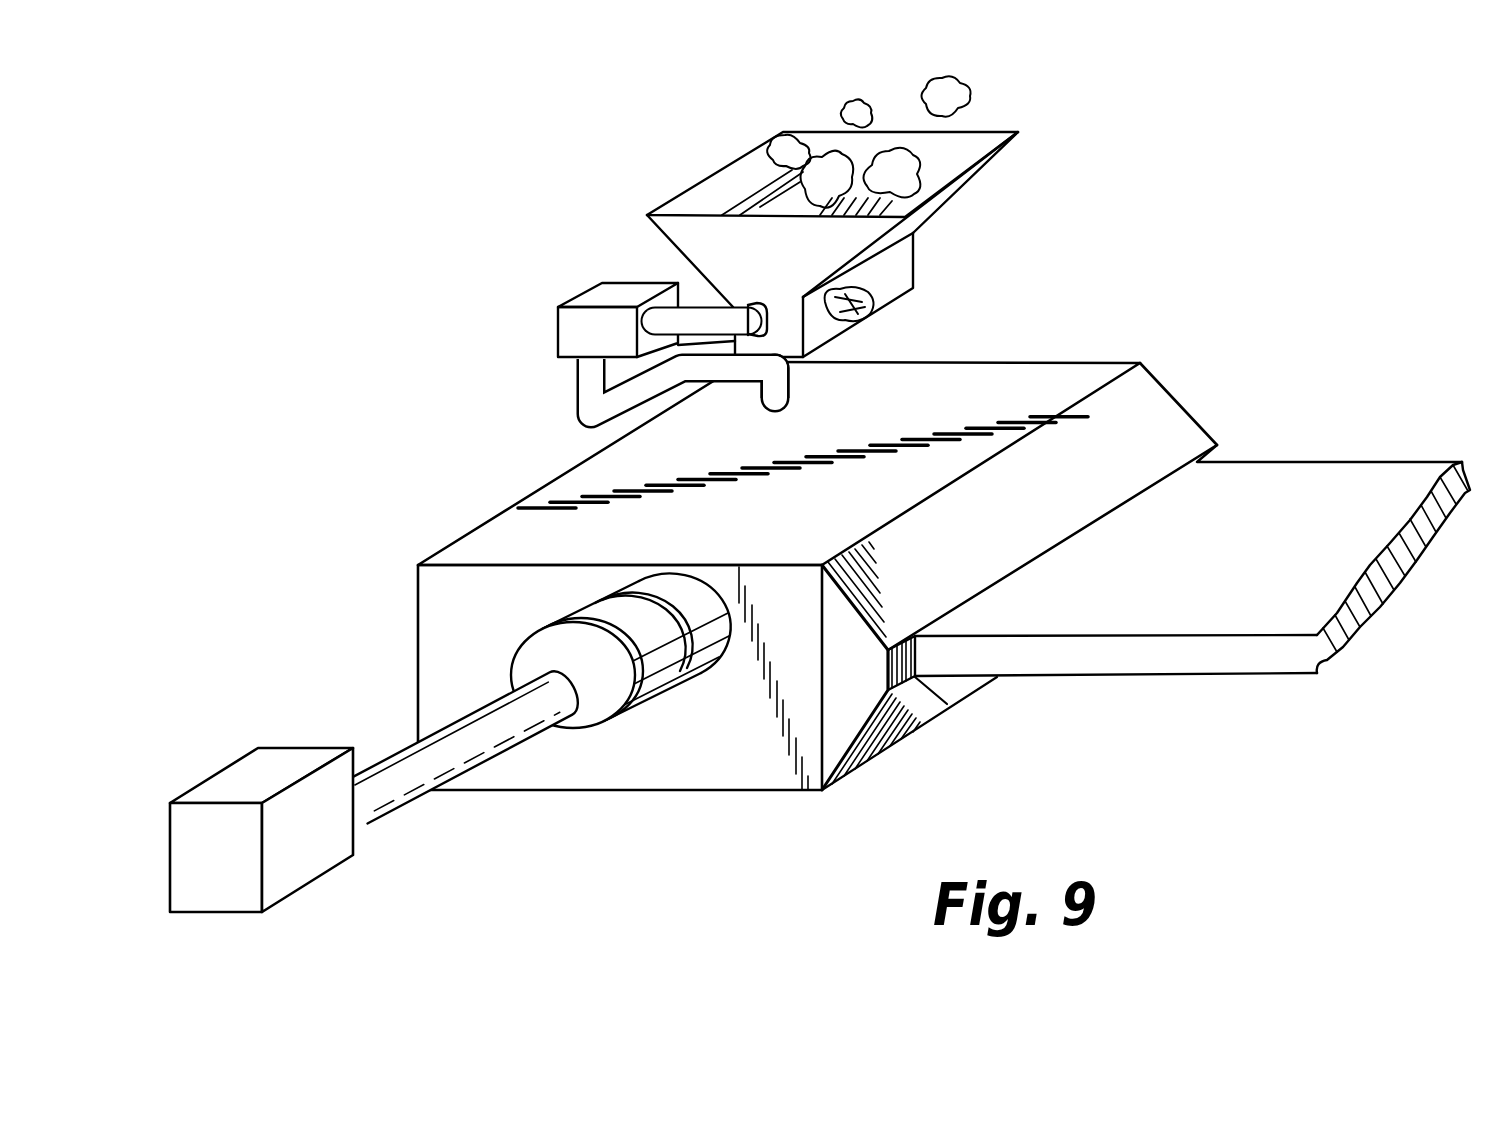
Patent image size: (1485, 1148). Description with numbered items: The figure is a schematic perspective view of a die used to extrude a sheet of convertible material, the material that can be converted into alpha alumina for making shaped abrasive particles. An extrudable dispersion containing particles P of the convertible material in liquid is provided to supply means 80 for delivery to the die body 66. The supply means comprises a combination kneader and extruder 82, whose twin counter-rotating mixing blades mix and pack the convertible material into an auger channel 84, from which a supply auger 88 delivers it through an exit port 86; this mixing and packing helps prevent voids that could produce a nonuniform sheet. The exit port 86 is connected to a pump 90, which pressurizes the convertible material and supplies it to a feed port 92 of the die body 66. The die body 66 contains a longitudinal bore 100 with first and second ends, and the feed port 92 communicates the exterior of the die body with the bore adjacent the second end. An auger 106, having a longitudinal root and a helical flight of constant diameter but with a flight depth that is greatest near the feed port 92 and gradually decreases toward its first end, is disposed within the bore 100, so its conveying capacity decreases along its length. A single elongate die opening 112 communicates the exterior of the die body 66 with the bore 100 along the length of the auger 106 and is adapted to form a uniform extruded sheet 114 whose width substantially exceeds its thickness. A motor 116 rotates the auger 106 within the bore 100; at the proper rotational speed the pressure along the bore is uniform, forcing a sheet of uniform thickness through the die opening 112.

The die body 66 is at (768, 826).
The supply means 80 is at (967, 142).
The combination kneader and extruder 82 is at (885, 201).
The auger channel 84 is at (835, 289).
The exit port 86 is at (697, 307).
The supply auger 88 is at (860, 309).
The pump 90 is at (598, 297).
The feed port 92 is at (792, 413).
The longitudinal bore 100 is at (663, 687).
The auger 106 is at (397, 770).
The elongate die opening 112 is at (917, 660).
The uniform extruded sheet 114 is at (1320, 473).
The motor 116 is at (242, 772).
The particles P is at (828, 160).